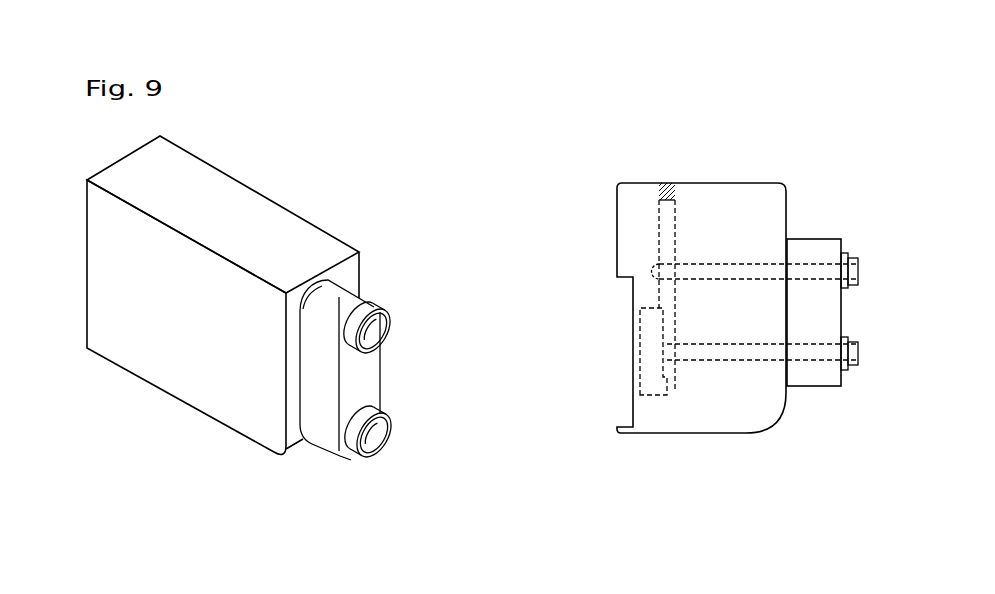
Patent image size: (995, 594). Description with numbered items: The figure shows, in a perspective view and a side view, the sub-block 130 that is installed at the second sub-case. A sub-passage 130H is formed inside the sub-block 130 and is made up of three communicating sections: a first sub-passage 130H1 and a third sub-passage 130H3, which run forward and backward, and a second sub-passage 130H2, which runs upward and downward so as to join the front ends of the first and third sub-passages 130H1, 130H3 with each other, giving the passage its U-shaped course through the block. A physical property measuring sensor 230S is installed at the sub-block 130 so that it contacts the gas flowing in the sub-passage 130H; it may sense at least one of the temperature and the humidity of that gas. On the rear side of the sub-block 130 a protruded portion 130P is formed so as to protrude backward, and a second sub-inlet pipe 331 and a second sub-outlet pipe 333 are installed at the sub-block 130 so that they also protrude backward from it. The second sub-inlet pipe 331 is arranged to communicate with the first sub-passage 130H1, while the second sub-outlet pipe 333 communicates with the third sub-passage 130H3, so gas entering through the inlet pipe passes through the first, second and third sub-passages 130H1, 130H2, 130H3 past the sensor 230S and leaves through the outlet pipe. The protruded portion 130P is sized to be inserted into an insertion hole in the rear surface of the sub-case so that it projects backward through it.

The sub-block 130 is at (275, 226).
The protruded portion 130P is at (372, 378).
The second sub-inlet pipe 331 is at (376, 438).
The second sub-outlet pipe 333 is at (374, 336).
The physical property measuring sensor 230S is at (650, 340).
The sub-passage 130H is at (743, 374).
The first sub-passage 130H1 is at (738, 351).
The second sub-passage 130H2 is at (672, 297).
The third sub-passage 130H3 is at (810, 270).